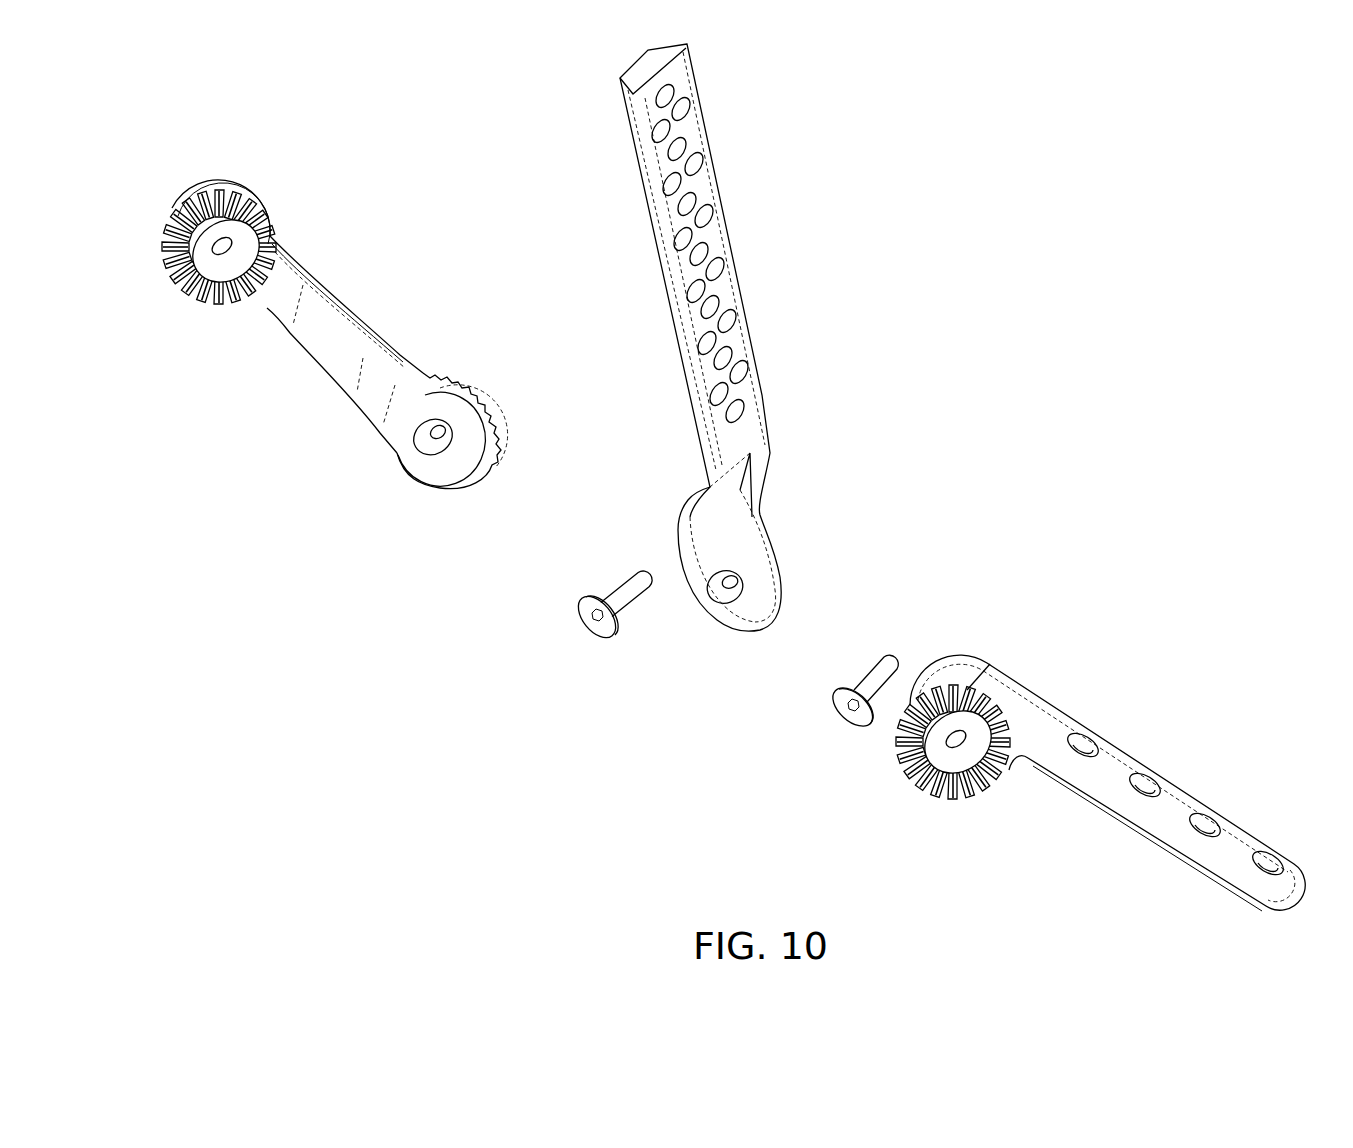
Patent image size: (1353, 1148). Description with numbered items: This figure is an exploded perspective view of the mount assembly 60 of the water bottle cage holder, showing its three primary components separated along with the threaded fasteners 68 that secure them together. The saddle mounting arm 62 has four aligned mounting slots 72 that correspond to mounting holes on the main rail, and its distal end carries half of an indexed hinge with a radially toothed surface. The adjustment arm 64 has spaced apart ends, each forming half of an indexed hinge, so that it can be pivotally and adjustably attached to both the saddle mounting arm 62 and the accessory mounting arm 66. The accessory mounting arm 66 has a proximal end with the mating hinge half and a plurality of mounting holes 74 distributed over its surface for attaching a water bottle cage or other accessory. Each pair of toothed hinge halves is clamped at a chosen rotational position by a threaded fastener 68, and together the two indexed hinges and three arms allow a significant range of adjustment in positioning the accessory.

The mount assembly 60 is at (1108, 120).
The saddle mounting arm 62 is at (1107, 785).
The adjustment arm 64 is at (327, 347).
The accessory mounting arm 66 is at (757, 445).
The threaded fastener 68 is at (602, 630).
The mounting slots 72 is at (1186, 775).
The mounting holes 74 is at (713, 276).